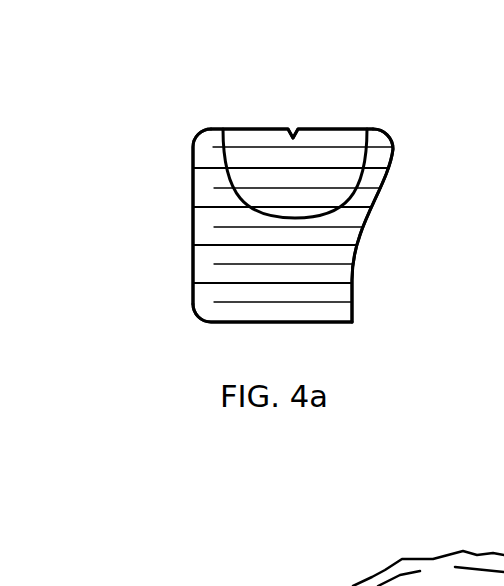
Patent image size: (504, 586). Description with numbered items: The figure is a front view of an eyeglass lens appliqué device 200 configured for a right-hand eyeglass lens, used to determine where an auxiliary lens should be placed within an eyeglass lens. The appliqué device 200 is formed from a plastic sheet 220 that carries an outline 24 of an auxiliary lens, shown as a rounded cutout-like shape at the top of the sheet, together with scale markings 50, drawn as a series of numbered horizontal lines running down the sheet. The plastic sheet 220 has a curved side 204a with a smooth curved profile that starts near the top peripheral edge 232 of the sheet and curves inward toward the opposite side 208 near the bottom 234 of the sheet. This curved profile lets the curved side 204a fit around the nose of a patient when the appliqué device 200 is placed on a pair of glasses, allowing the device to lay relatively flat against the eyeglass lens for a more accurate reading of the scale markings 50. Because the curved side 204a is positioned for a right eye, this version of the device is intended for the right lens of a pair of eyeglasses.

The eyeglass lens appliqué device 200 is at (167, 98).
The scale markings 50 is at (178, 128).
The opposite side 208 is at (193, 283).
The top peripheral edge 232 is at (333, 127).
The outline of an auxiliary lens 24 is at (370, 128).
The plastic sheet 220 is at (366, 218).
The curved side 204a is at (353, 283).
The bottom 234 is at (282, 323).